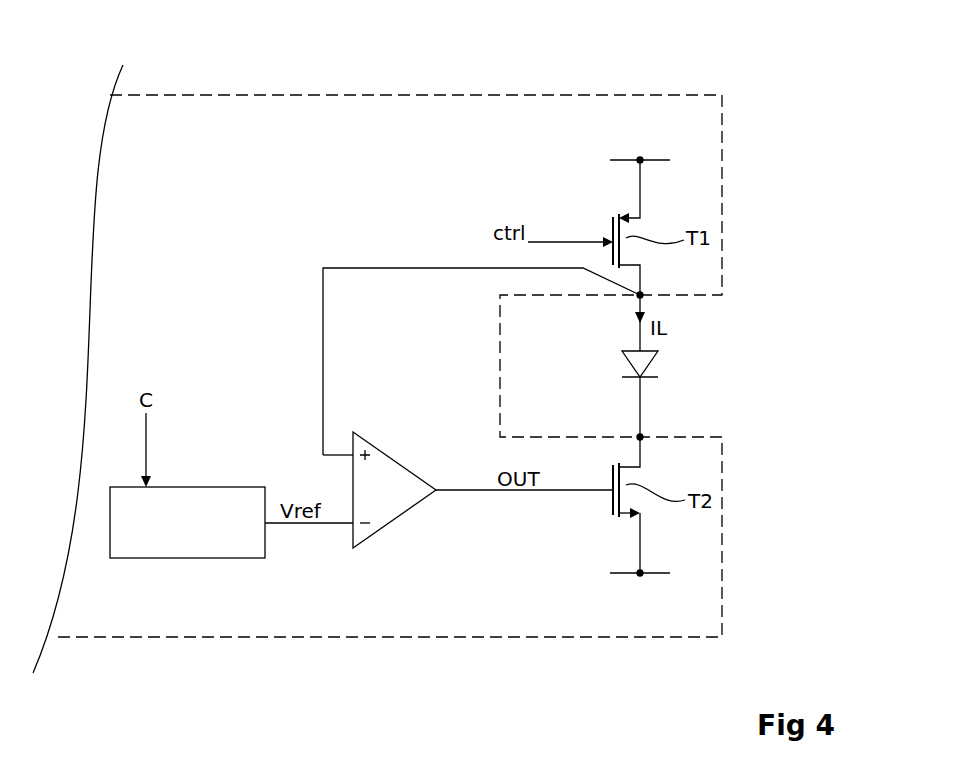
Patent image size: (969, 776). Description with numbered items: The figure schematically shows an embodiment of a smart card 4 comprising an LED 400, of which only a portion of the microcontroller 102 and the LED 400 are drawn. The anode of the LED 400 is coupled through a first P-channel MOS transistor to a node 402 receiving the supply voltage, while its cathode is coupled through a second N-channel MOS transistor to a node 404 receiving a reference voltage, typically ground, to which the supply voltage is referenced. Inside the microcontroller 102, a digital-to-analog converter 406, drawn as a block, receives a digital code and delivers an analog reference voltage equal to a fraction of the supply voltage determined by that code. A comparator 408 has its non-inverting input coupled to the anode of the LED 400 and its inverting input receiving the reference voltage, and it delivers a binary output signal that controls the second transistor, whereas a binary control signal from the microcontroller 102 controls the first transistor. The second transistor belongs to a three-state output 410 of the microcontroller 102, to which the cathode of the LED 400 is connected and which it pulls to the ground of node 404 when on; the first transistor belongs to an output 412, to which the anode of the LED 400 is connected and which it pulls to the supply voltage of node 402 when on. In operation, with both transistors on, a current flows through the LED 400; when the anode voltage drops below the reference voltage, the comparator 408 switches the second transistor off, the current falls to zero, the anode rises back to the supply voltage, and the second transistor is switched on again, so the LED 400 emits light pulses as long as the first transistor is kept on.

The smart card 4 is at (444, 319).
The microcontroller 102 is at (558, 94).
The LED 400 is at (652, 360).
The node of application of voltage Vcc 402 is at (643, 163).
The node of application of a reference voltage 404 is at (642, 572).
The digital-to-analog converter 406 is at (230, 558).
The comparator 408 is at (398, 507).
The three-state output 410 is at (643, 436).
The output 412 is at (641, 297).